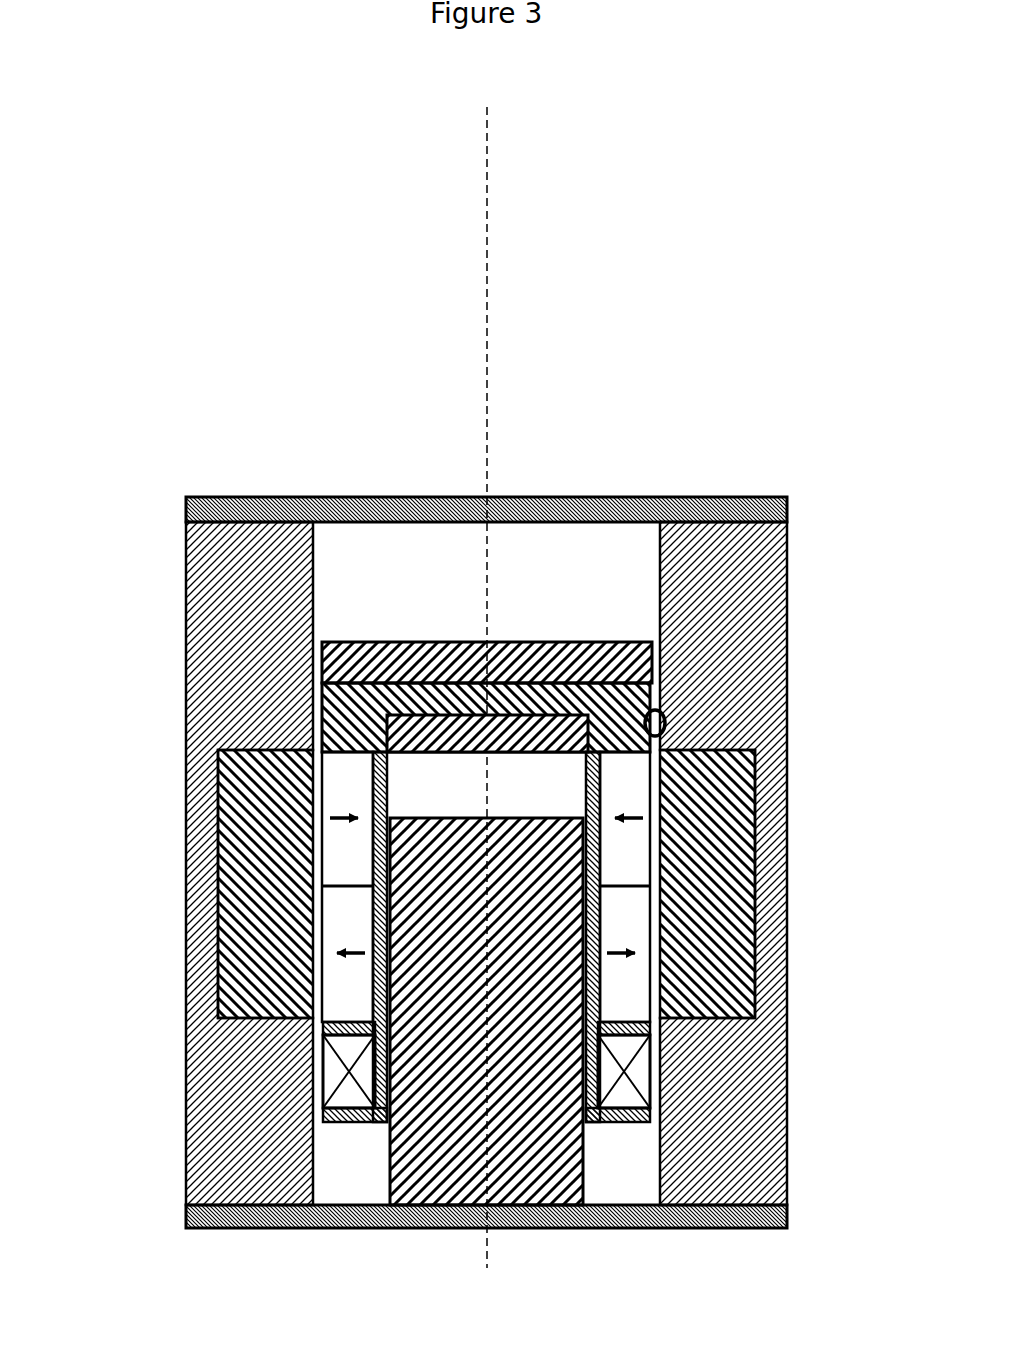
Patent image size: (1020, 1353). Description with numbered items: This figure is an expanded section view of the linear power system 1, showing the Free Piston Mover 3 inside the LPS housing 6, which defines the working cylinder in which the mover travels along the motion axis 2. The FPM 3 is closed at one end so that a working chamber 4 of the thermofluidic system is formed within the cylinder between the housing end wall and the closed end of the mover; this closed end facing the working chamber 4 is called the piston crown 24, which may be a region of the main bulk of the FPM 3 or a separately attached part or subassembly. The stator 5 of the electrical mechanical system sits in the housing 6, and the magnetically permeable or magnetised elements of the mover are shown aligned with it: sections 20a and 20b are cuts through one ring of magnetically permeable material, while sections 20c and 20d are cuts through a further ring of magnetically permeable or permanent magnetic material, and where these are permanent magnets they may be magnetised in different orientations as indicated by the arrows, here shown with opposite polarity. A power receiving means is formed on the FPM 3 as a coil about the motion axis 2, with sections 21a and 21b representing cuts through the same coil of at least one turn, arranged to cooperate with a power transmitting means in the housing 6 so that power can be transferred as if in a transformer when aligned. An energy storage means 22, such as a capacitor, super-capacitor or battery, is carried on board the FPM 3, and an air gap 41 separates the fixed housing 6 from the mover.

The electromagnetic actuator 1 is at (735, 458).
The motion axis 2 is at (487, 346).
The free piston mover 3 is at (508, 692).
The working chamber 4 is at (340, 596).
The stator 5 is at (720, 944).
The LPS housing 6 is at (718, 571).
The magnetically permeable element section 20a is at (347, 852).
The magnetically permeable element section 20b is at (625, 852).
The magnetically permeable element section 20c is at (345, 927).
The magnetically permeable element section 20d is at (623, 925).
The power receiving means coil section 21a is at (348, 1088).
The power receiving means coil section 21b is at (623, 1088).
The energy storage means 22 is at (575, 718).
The piston crown 24 is at (342, 649).
The air gap 41 is at (667, 721).